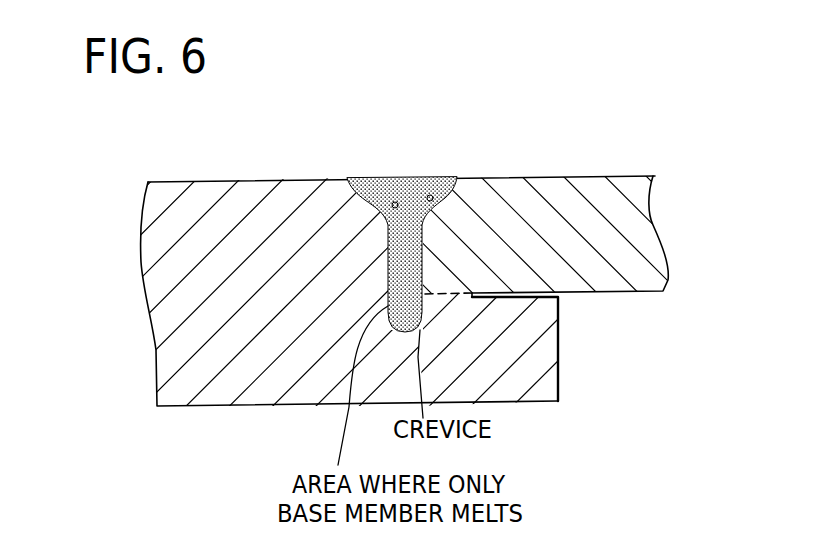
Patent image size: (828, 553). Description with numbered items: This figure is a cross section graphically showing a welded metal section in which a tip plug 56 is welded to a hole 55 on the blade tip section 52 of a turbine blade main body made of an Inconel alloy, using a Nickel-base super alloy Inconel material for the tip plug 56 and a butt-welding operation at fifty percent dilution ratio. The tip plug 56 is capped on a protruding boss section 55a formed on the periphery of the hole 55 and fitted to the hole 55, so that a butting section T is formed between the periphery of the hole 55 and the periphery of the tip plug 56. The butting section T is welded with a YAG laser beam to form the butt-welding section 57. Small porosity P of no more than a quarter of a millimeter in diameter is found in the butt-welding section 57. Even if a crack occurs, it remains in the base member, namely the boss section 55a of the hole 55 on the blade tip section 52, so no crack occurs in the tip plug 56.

The blade tip section 52 is at (252, 406).
The hole 55 is at (625, 338).
The protruding boss section 55a is at (527, 377).
The tip plug 56 is at (550, 177).
The butt-welding section 57 is at (372, 178).
The butting section T is at (414, 196).
The porosity P is at (434, 190).